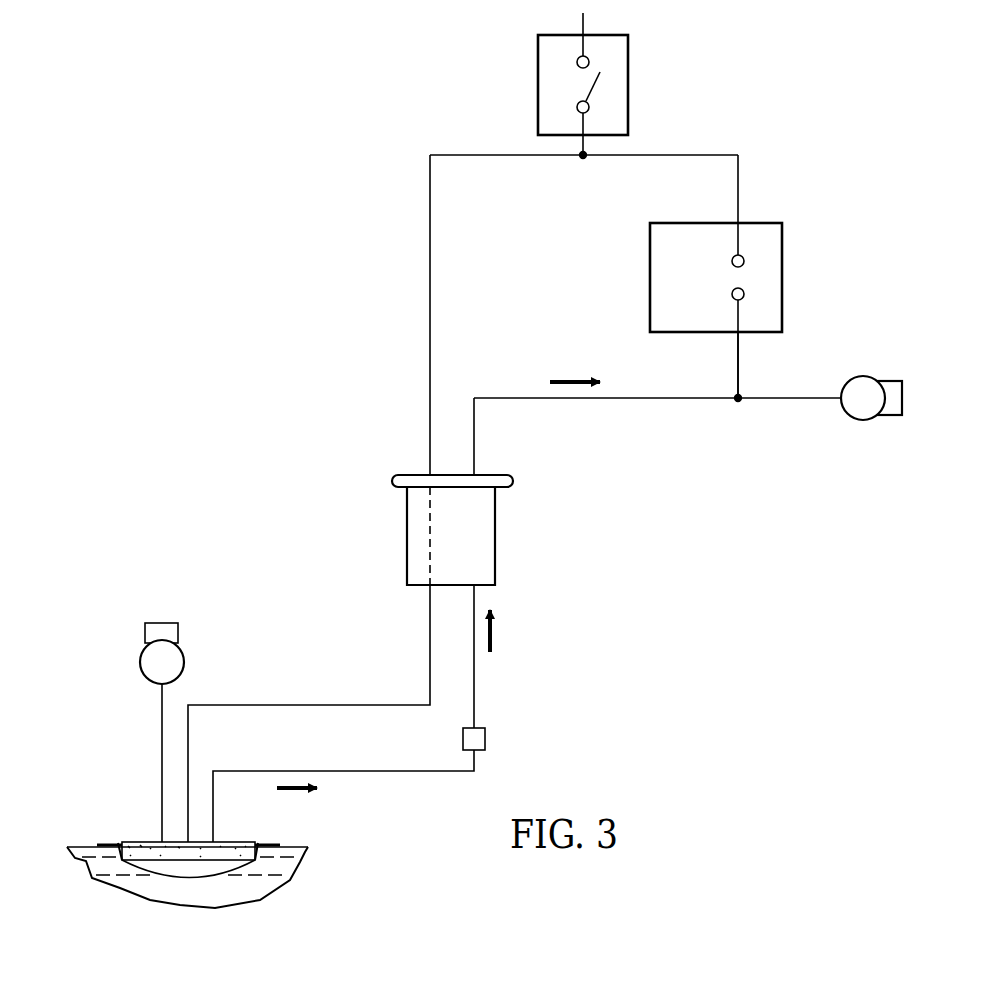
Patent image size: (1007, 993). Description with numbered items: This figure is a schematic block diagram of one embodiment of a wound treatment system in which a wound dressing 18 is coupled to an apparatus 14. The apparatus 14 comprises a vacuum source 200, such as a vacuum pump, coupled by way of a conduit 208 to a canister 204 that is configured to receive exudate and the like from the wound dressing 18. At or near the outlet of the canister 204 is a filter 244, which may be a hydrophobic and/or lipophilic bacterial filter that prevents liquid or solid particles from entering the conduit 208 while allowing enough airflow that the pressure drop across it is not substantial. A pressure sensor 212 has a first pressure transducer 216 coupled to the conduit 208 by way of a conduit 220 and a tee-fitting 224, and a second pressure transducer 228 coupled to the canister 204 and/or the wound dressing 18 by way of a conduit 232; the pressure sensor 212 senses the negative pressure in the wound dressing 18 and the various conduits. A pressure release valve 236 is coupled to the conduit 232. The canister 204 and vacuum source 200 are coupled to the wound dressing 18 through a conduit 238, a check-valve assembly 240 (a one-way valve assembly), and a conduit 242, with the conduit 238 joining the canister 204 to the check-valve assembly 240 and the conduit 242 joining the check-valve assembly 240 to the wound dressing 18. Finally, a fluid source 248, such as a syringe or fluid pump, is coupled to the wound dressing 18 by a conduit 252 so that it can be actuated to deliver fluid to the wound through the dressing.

The apparatus 14 is at (330, 327).
The wound dressing 18 is at (128, 814).
The vacuum source 200 is at (862, 420).
The canister 204 is at (416, 535).
The conduit 208 is at (617, 400).
The pressure sensor 212 is at (787, 275).
The first pressure transducer 216 is at (730, 294).
The conduit 220 is at (740, 366).
The tee-fitting 224 is at (738, 405).
The second pressure transducer 228 is at (730, 261).
The conduit 232 is at (429, 656).
The pressure release valve 236 is at (628, 84).
The conduit 238 is at (474, 668).
The check-valve assembly 240 is at (485, 740).
The conduit 242 is at (398, 772).
The filter 244 is at (393, 479).
The fluid source 248 is at (140, 660).
The conduit 252 is at (160, 722).